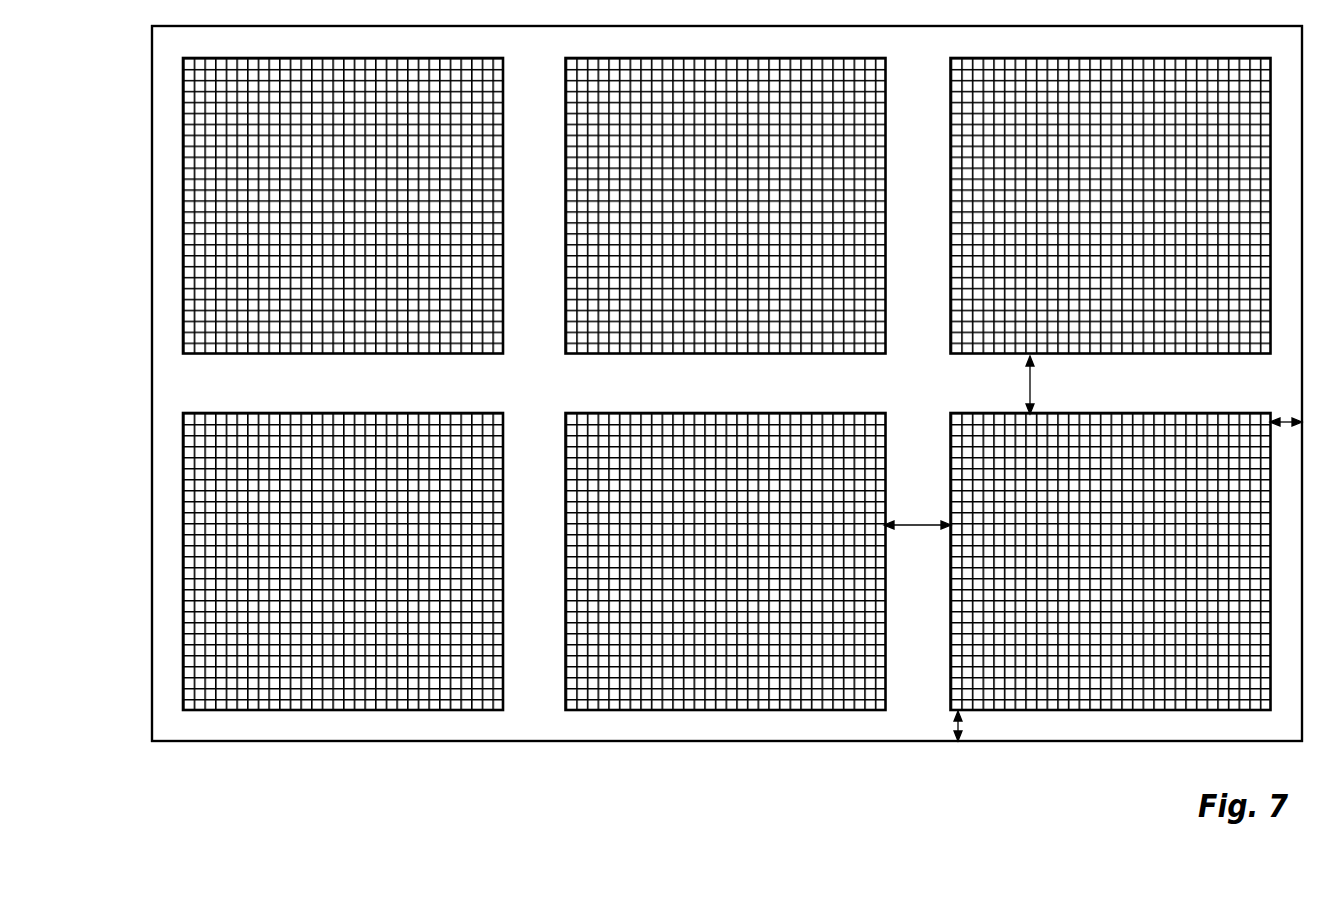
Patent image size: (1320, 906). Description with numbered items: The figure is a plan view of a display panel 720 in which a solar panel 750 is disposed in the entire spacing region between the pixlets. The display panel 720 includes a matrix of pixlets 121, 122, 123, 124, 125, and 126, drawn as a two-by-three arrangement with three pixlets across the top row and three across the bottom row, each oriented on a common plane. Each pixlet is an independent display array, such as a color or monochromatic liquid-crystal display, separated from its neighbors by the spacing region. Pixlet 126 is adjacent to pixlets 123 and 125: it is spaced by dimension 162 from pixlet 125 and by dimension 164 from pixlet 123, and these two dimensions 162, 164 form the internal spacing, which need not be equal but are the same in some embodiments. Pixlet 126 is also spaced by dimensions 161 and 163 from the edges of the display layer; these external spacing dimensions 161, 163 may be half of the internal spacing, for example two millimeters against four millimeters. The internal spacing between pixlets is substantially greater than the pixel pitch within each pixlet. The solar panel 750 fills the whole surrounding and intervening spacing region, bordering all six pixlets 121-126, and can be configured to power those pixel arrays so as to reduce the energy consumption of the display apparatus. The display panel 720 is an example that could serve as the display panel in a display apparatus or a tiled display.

The pixlet 121 is at (343, 206).
The pixlet 122 is at (726, 206).
The pixlet 123 is at (1111, 206).
The pixlet 124 is at (343, 561).
The pixlet 125 is at (726, 561).
The pixlet 126 is at (1111, 561).
The solar panel 750 is at (727, 383).
The display panel 720 is at (1167, 723).
The dimension 161 is at (956, 725).
The dimension 162 is at (932, 528).
The dimension 163 is at (1286, 416).
The dimension 164 is at (1032, 384).